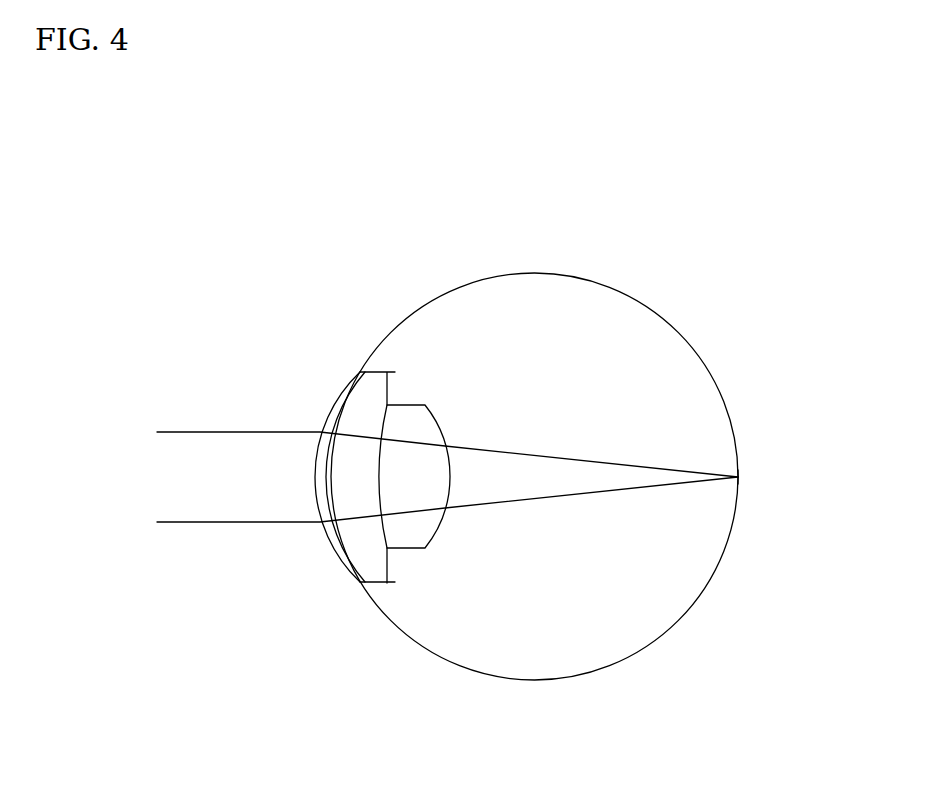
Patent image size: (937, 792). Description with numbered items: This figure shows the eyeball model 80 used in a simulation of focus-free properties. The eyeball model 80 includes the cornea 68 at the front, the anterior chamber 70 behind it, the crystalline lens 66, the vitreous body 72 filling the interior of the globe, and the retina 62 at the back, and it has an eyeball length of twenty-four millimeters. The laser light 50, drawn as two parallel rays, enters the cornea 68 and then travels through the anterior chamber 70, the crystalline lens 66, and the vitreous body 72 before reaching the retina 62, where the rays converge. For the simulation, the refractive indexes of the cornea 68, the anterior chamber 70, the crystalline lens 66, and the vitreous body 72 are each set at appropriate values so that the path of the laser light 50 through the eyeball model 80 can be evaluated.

The laser light 50 is at (205, 457).
The retina 62 is at (738, 457).
The crystalline lens 66 is at (418, 425).
The cornea 68 is at (333, 418).
The anterior chamber 70 is at (375, 405).
The vitreous body 72 is at (532, 393).
The eyeball model 80 is at (655, 268).